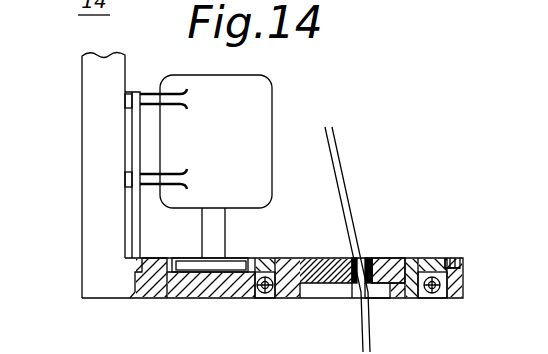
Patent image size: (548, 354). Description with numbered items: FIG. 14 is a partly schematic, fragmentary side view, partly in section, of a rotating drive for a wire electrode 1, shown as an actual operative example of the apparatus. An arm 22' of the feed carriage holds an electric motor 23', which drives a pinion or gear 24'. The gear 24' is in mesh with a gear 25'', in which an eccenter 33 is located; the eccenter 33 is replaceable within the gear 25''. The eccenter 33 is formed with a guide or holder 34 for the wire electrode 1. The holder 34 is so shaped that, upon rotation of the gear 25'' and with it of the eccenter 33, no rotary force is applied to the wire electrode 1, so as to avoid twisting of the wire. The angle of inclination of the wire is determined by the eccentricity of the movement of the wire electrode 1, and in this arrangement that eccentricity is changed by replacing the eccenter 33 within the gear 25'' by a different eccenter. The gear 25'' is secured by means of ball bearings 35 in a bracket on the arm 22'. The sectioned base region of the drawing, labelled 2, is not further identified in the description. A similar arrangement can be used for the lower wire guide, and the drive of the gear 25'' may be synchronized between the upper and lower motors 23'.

The wire electrode 1 is at (338, 158).
The base plate / table 2 is at (480, 296).
The arm of the feed carriage 22' is at (84, 176).
The electric motor 23' is at (235, 166).
The pinion or gear 24' is at (221, 247).
The gear 25'' is at (448, 246).
The eccenter 33 is at (387, 259).
The guide or holder 34 is at (369, 255).
The ball bearings 35 is at (426, 299).